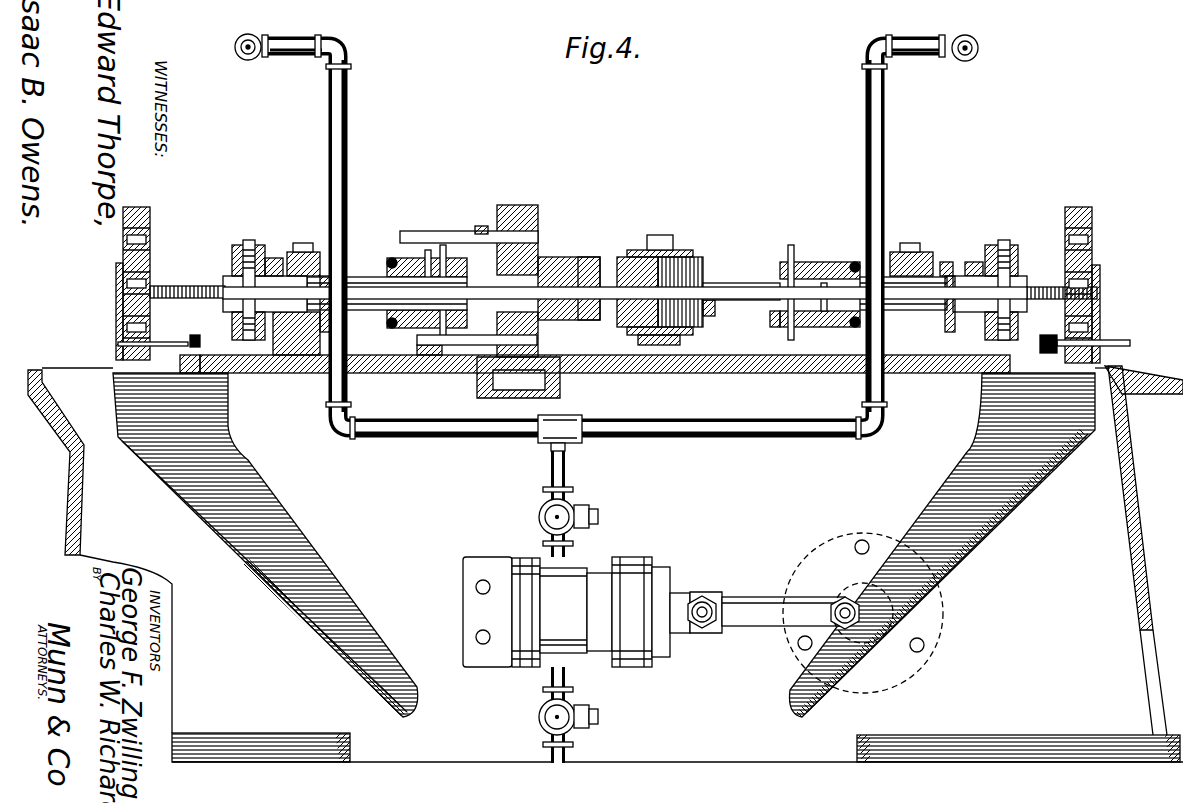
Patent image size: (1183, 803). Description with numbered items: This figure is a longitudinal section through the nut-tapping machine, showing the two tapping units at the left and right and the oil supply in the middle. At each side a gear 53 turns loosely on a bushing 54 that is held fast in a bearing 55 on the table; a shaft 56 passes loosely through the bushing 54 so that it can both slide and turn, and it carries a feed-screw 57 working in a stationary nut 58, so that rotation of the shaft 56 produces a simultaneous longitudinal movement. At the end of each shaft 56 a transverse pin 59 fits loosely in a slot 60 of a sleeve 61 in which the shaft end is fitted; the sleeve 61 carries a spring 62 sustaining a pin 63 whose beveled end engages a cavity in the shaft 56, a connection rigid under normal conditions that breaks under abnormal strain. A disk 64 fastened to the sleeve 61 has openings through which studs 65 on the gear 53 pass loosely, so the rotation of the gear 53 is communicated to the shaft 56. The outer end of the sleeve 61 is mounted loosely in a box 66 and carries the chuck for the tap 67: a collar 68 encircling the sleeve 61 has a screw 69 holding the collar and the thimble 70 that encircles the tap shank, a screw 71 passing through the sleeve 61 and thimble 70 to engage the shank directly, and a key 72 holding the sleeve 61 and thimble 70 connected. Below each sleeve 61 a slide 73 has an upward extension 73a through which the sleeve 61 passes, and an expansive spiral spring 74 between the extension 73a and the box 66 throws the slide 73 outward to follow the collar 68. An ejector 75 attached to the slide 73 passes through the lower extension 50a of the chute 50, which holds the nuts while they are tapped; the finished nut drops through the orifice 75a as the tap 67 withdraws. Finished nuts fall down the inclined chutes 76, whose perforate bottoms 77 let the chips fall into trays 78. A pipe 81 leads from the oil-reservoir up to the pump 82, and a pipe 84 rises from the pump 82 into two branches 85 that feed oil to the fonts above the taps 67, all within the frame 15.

The frame side wall 15 is at (75, 505).
The chute 50 is at (123, 248).
The lower extension of chute 50a is at (116, 293).
The gear 53 is at (538, 220).
The bushing 54 is at (590, 258).
The bearing 55 is at (568, 258).
The shaft 56 is at (732, 284).
The feed-screw 57 is at (708, 316).
The stationary nut 58 is at (695, 262).
The transverse pin 59 is at (417, 338).
The slot 60 is at (428, 250).
The sleeve 61 is at (368, 278).
The spring 62 is at (408, 258).
The pin 63 is at (445, 340).
The disk 64 is at (480, 227).
The stud 65 is at (462, 237).
The box 66 is at (305, 250).
The tap 67 is at (208, 285).
The collar 68 is at (233, 262).
The screw 69 is at (249, 248).
The thimble 70 is at (228, 305).
The screw 71 is at (233, 328).
The key 72 is at (336, 322).
The slide 73 is at (245, 356).
The upward extension of slide 73a is at (275, 258).
The expansive spiral spring 74 is at (290, 356).
The ejector 75 is at (118, 344).
The orifice 75a is at (190, 340).
The inclined chute 76 is at (292, 535).
The perforate bottom 77 is at (210, 528).
The tray 78 is at (282, 748).
The pipe 81 is at (566, 674).
The pump 82 is at (510, 609).
The pipe 84 is at (566, 553).
The branch 85 is at (329, 143).